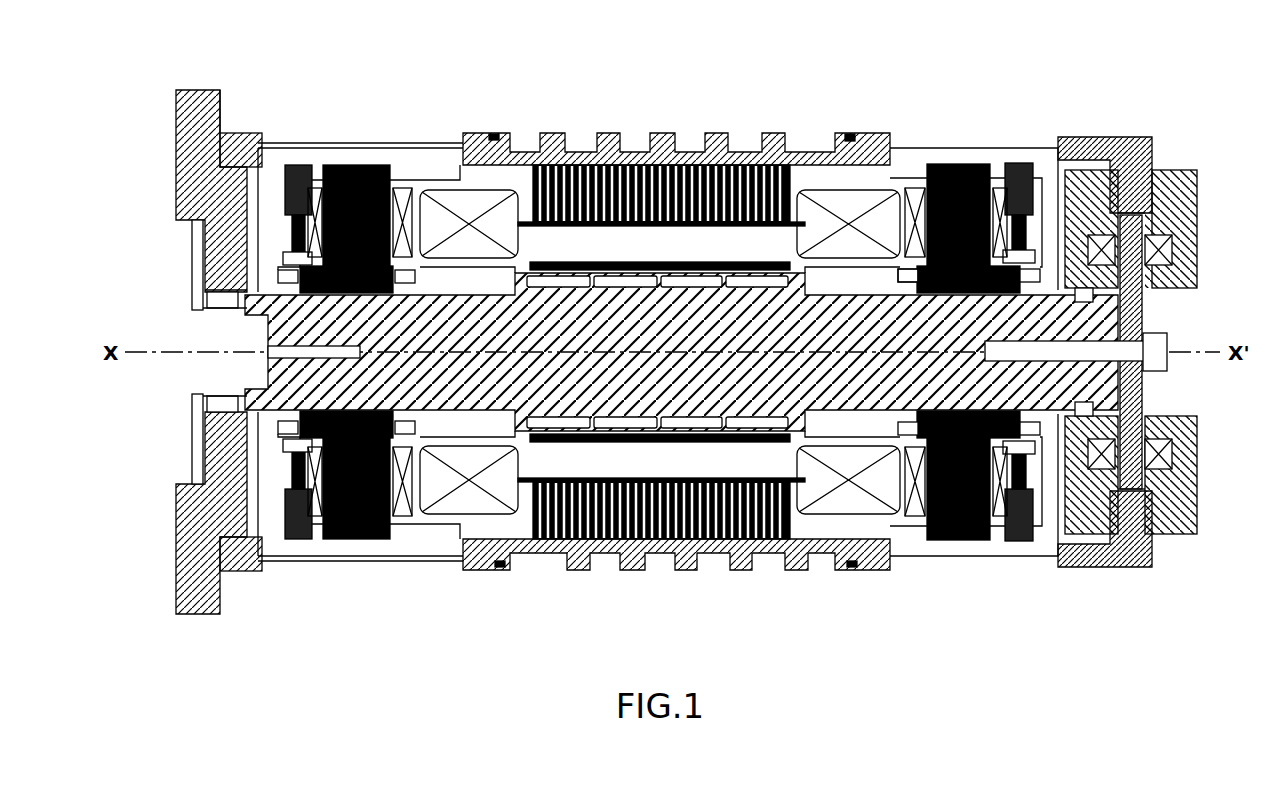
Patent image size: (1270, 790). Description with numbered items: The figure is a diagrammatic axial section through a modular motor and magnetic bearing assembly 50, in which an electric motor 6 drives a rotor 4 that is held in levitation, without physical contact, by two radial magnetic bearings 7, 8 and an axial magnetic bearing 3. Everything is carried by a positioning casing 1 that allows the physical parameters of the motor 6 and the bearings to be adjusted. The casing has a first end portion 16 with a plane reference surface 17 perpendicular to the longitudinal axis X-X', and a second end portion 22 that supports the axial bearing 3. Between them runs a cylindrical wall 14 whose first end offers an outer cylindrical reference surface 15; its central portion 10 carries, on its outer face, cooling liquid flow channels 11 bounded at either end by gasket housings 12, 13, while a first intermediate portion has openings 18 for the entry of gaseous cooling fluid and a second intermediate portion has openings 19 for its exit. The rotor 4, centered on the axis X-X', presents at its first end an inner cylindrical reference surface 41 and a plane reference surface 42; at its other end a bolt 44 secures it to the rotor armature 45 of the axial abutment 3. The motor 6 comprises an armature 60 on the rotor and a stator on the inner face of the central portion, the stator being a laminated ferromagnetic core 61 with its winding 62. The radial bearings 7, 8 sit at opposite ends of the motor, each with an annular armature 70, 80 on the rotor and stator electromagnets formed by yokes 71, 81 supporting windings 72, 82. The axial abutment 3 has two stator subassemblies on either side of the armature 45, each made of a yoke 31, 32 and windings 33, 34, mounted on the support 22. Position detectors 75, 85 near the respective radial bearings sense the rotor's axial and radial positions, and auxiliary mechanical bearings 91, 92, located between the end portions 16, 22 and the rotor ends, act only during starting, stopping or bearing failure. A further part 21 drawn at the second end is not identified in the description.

The positioning casing 1 is at (866, 570).
The axial magnetic bearing 3 is at (1200, 250).
The rotor 4 is at (720, 380).
The electric motor 6 is at (598, 128).
The first radial magnetic bearing 7 is at (355, 160).
The second radial magnetic bearing 8 is at (950, 190).
The central portion 10 is at (500, 560).
The cooling liquid flow channels 11 is at (660, 572).
The gasket housing 12 is at (494, 133).
The gasket housing 13 is at (848, 133).
The cylindrical wall 14 is at (240, 150).
The outer cylindrical reference surface 15 is at (272, 180).
The first end portion 16 is at (190, 145).
The plane reference surface 17 is at (222, 108).
The openings for entry of gaseous cooling fluid 18 is at (458, 152).
The openings for exit of gaseous cooling fluid 19 is at (980, 160).
The right upper support block 21 is at (1090, 145).
The second end portion 22 is at (1135, 565).
The yoke 31 is at (1095, 405).
The yoke 32 is at (1185, 440).
The windings 33 is at (1150, 218).
The windings 34 is at (1170, 273).
The inner cylindrical reference surface 41 is at (205, 305).
The plane reference surface 42 is at (195, 400).
The bolt 44 is at (1160, 348).
The rotor armature 45 is at (1140, 290).
The modular motor and magnetic bearing assembly 50 is at (225, 640).
The armature 60 is at (635, 295).
The core 61 is at (648, 200).
The winding 62 is at (820, 210).
The annular armature 70 is at (290, 300).
The yoke 71 is at (300, 240).
The windings 72 is at (402, 195).
The first position detector 75 is at (295, 490).
The annular armature 80 is at (905, 290).
The yoke 81 is at (1015, 195).
The windings 82 is at (910, 230).
The second position detector 85 is at (1020, 455).
The first auxiliary mechanical bearing 91 is at (205, 275).
The second auxiliary mechanical bearing 92 is at (1135, 465).